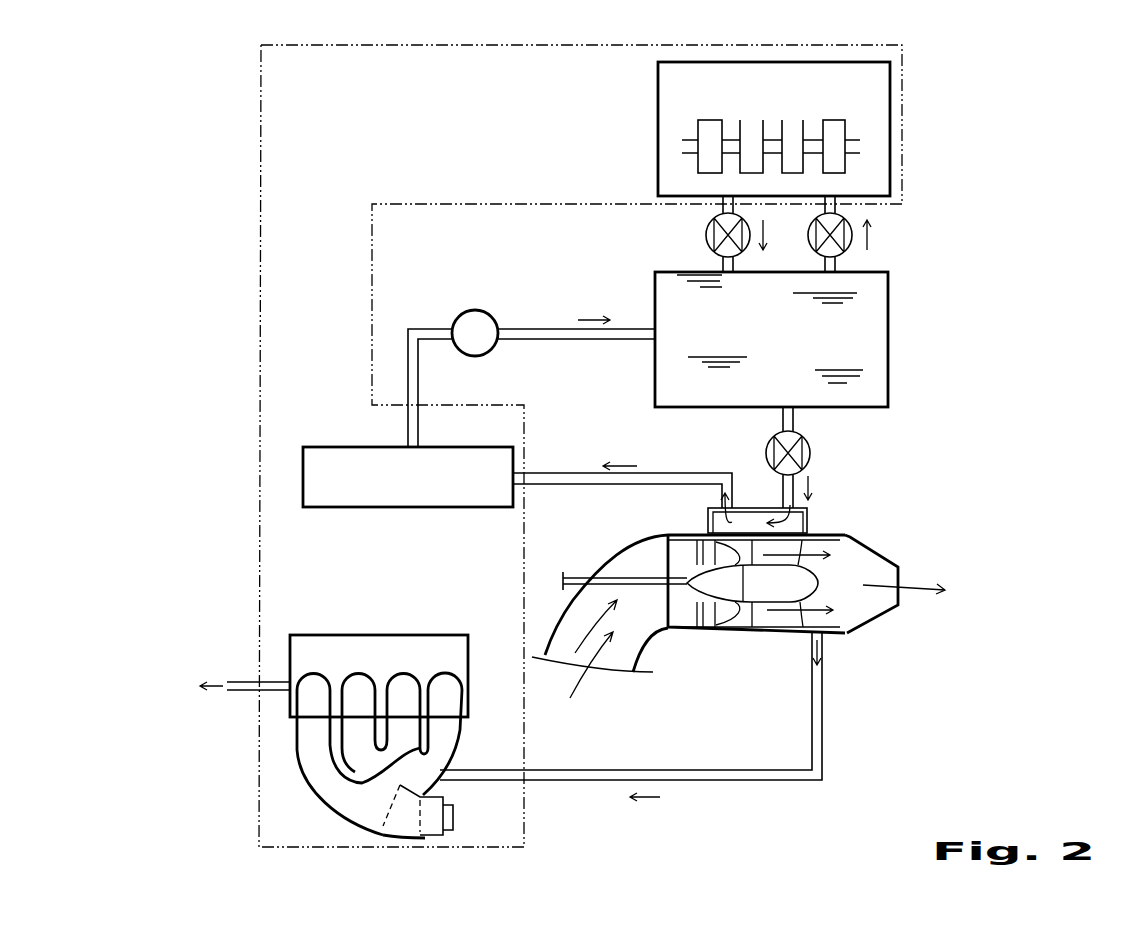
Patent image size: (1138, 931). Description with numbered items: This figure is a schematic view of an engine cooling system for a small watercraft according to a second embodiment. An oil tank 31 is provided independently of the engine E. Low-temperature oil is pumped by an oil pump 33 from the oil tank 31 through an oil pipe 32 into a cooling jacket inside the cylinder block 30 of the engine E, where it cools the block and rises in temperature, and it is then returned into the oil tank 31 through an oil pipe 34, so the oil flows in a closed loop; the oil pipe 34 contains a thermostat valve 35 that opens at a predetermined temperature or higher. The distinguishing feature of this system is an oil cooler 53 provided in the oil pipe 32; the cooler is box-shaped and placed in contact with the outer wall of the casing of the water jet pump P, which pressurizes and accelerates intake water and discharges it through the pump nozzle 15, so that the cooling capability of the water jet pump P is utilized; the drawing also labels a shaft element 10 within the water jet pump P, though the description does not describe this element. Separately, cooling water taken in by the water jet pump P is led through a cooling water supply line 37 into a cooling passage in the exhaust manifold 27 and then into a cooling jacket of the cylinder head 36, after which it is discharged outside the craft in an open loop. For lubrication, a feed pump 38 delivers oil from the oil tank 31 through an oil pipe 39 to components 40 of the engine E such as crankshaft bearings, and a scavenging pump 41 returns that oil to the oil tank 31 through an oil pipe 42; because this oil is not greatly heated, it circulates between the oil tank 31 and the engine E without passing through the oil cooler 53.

The turbocharger 10 is at (578, 577).
The pump nozzle 15 is at (880, 548).
The exhaust manifold 27 is at (310, 755).
The cylinder block 30 is at (360, 508).
The oil tank 31 is at (888, 316).
The oil pipe 32 is at (587, 472).
The oil pump 33 is at (812, 442).
The oil pipe 34 is at (560, 341).
The thermostat valve 35 is at (466, 311).
The cylinder head 36 is at (297, 655).
The cooling water supply line 37 is at (757, 785).
The feed pump 38 is at (853, 258).
The oil pipe 39 is at (845, 205).
The components of the engine 40 is at (890, 104).
The scavenging pump 41 is at (706, 240).
The oil pipe 42 is at (720, 207).
The oil cooler 53 is at (813, 522).
The water jet pump P is at (837, 532).
The engine E is at (262, 274).